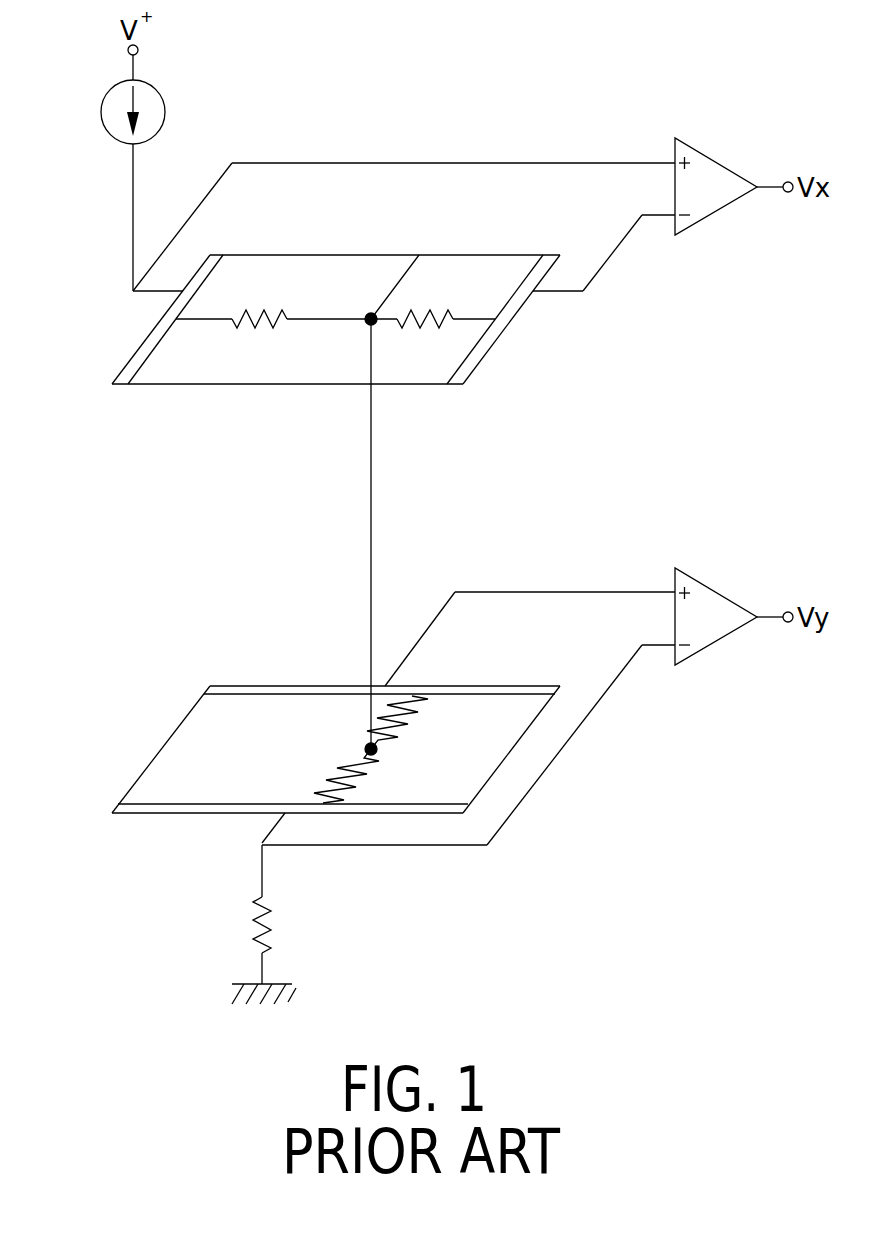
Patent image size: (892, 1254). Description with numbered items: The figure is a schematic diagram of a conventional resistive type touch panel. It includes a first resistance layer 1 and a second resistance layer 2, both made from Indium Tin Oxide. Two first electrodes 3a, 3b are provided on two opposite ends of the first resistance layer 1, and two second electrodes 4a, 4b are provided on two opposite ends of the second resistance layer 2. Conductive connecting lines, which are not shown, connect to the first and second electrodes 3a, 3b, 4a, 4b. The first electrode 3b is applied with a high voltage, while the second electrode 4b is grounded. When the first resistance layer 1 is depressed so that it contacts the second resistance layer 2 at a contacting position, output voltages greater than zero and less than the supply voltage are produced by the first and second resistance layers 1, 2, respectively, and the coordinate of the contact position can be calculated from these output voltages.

The first resistance layer 1 is at (197, 308).
The second resistance layer 2 is at (180, 747).
The first electrode 3a is at (515, 302).
The first electrode 3b is at (135, 358).
The second electrode 4a is at (255, 693).
The second electrode 4b is at (150, 810).